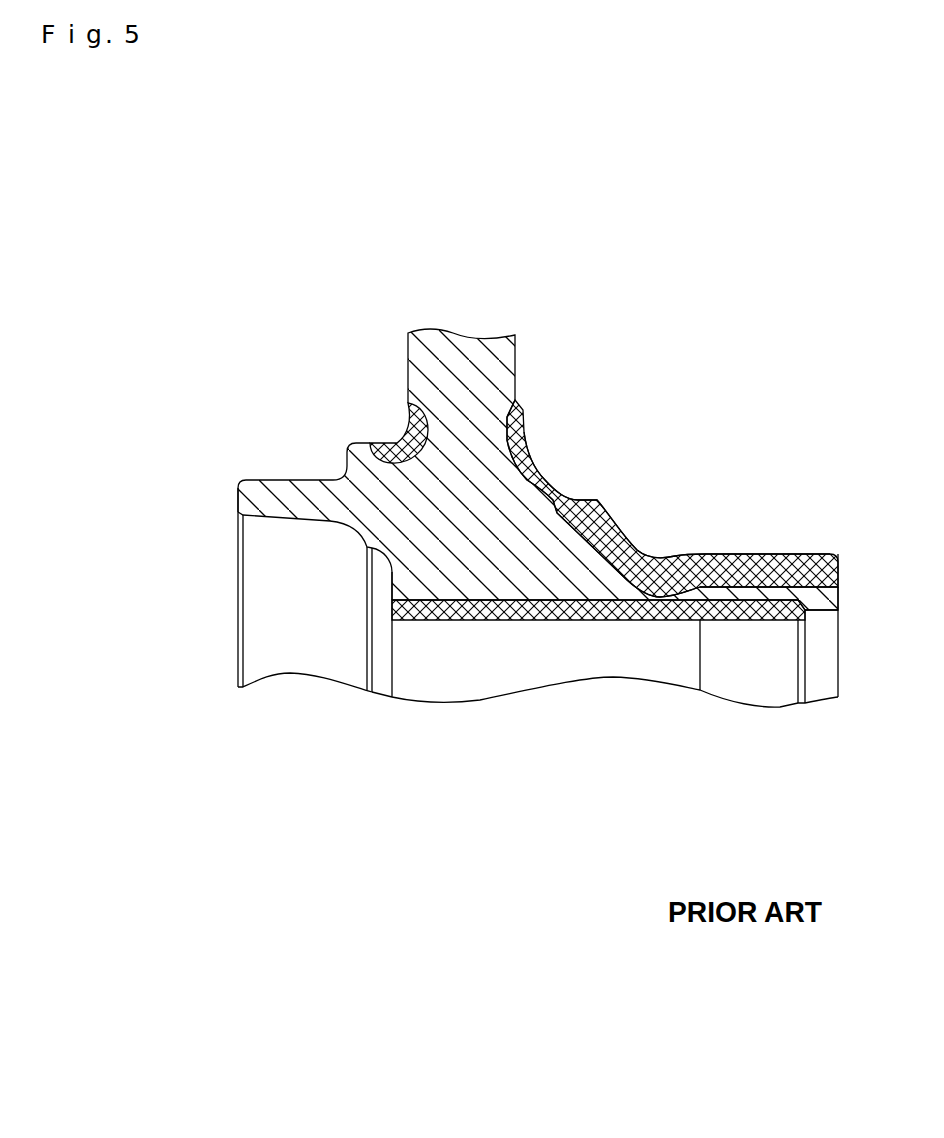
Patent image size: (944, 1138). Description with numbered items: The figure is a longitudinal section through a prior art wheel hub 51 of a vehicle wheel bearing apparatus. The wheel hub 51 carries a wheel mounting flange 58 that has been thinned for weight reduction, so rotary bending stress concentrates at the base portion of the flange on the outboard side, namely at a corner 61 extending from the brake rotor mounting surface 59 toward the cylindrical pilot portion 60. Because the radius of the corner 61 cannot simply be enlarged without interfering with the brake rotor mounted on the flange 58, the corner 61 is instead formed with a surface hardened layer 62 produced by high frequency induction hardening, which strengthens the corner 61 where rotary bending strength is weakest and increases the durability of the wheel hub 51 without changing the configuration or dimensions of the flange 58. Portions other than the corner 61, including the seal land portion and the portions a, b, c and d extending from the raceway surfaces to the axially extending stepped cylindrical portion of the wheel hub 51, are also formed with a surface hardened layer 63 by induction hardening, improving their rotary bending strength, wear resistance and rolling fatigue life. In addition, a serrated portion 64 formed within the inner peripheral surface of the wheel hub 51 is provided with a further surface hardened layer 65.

The wheel hub 51 is at (229, 606).
The wheel mounting flange 58 is at (468, 349).
The brake rotor mounting surface 59 is at (398, 374).
The cylindrical pilot portion 60 is at (288, 494).
The corner 61 is at (398, 436).
The surface hardened layer 62 is at (430, 437).
The surface hardened layer 63 is at (590, 501).
The serrated portion 64 is at (510, 622).
The surface hardened layer 65 is at (457, 620).
The portion a is at (546, 478).
The portion b is at (636, 541).
The portion c is at (696, 550).
The portion d is at (762, 551).